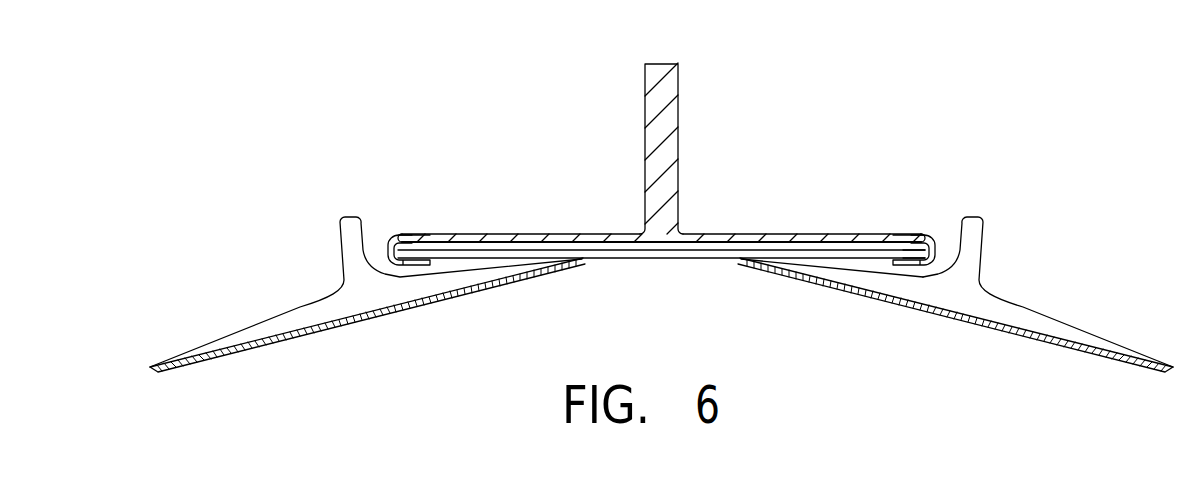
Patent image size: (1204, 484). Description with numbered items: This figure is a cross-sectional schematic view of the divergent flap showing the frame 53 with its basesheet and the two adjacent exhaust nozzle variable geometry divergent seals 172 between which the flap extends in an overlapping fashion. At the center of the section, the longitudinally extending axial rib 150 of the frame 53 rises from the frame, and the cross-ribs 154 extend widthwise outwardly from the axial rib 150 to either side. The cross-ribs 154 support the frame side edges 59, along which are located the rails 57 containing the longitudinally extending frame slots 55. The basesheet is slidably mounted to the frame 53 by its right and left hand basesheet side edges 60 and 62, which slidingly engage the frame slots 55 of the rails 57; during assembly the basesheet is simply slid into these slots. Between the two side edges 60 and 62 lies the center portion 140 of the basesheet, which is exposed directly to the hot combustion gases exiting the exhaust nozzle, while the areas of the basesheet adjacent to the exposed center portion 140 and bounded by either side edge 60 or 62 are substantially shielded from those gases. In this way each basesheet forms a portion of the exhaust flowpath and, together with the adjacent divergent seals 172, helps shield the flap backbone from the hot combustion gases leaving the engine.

The axial rib 150 is at (662, 128).
The frame 53 is at (762, 236).
The cross-ribs 154 is at (603, 233).
The left hand basesheet side edge 62 is at (435, 250).
The center portion 140 is at (679, 259).
The right hand basesheet side edge 60 is at (903, 251).
The rails 57 is at (417, 263).
The frame slots 55 is at (928, 240).
The frame side edges 59 is at (422, 233).
The divergent seals 172 is at (300, 333).